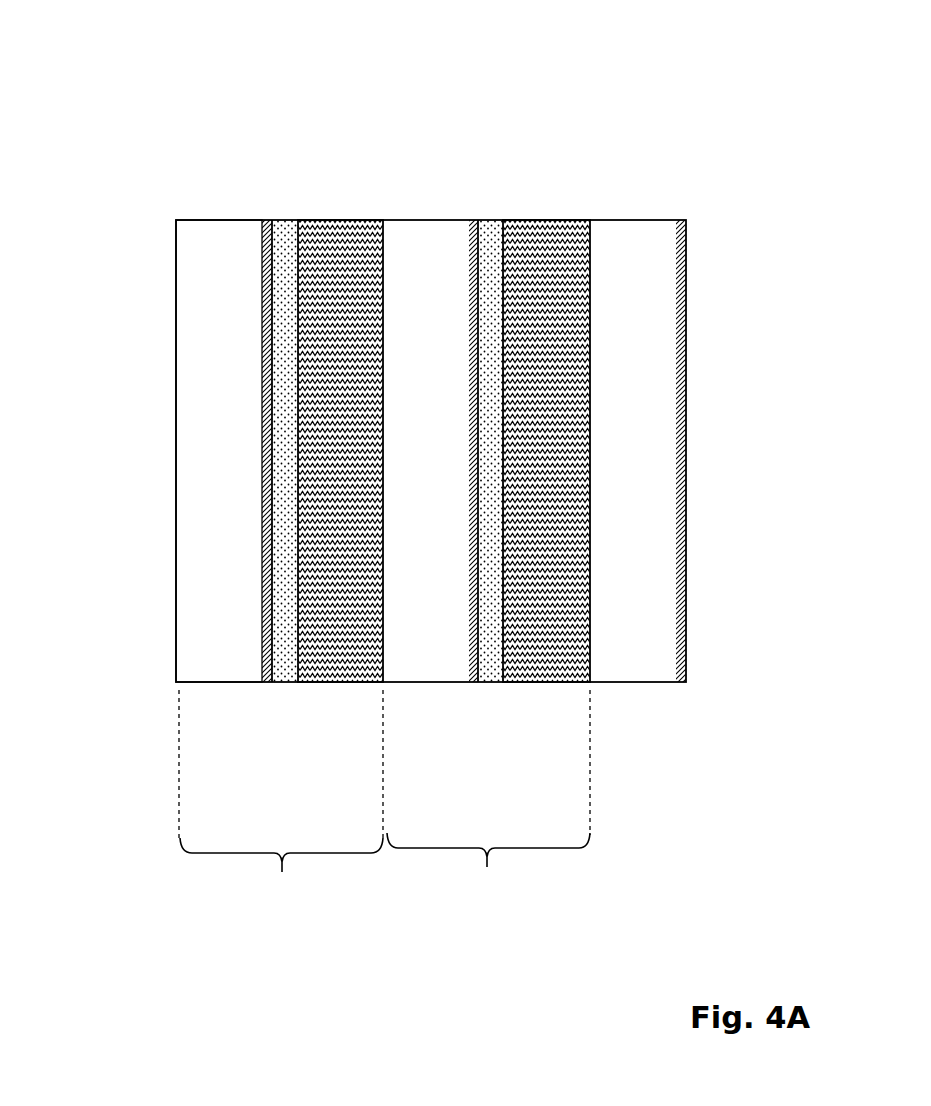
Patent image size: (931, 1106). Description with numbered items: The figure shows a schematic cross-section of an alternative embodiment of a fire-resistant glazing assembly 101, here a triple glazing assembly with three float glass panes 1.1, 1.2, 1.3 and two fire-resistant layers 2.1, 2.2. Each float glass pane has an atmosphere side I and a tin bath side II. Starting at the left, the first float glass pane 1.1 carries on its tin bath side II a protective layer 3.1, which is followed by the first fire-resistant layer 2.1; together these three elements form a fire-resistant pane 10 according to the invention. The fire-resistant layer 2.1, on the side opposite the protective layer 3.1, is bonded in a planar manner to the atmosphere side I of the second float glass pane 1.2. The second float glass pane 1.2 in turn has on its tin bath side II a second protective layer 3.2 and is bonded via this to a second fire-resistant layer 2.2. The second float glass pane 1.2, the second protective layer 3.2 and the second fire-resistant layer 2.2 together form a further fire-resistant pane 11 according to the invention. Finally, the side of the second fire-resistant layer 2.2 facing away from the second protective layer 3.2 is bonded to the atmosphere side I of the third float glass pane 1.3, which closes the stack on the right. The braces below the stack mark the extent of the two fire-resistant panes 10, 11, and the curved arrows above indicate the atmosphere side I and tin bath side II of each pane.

The fire-resistant glazing assembly 101 is at (165, 152).
The float glass pane 1.1 is at (193, 647).
The protective layer 3.1 is at (285, 665).
The fire-resistant layer 2.1 is at (337, 665).
The second float glass pane 1.2 is at (418, 667).
The second protective layer 3.2 is at (488, 667).
The second fire-resistant layer 2.2 is at (540, 667).
The third float glass pane 1.3 is at (622, 667).
The fire-resistant pane 10 is at (281, 805).
The fire-resistant pane 11 is at (488, 802).
The atmosphere side I is at (176, 256).
The tin bath side II is at (275, 228).